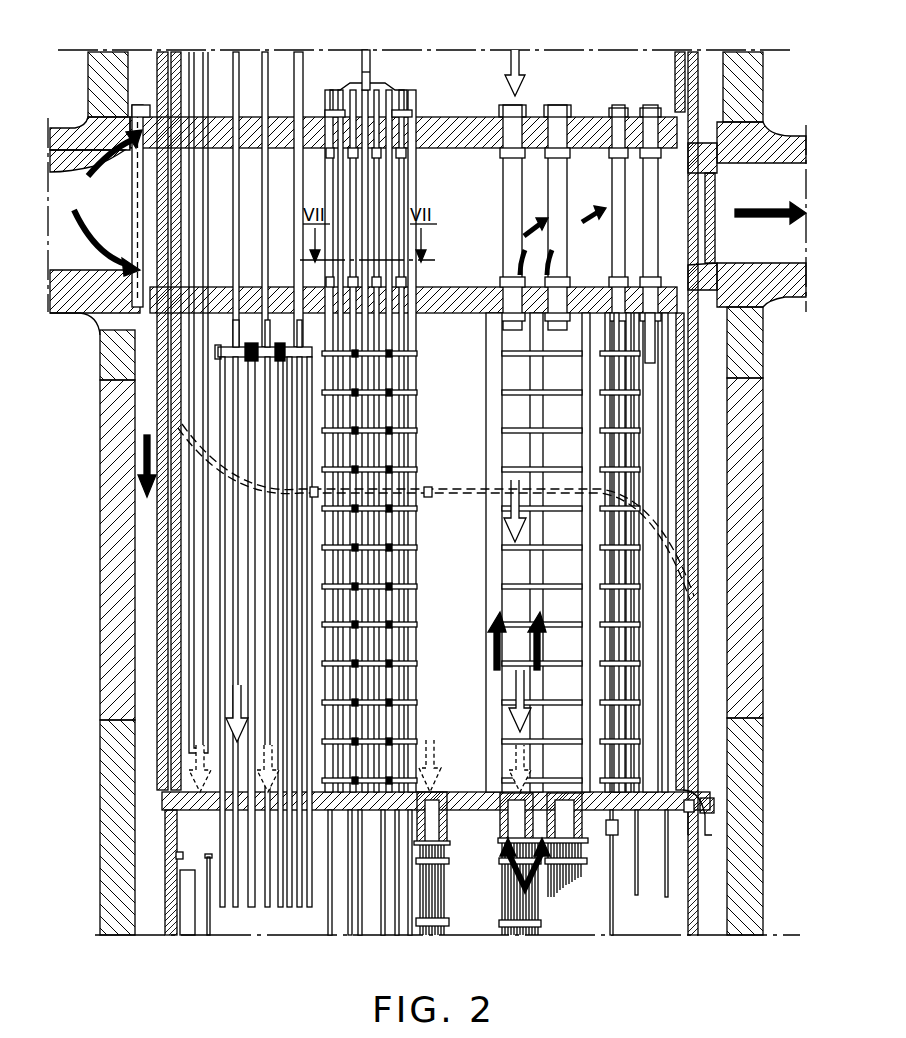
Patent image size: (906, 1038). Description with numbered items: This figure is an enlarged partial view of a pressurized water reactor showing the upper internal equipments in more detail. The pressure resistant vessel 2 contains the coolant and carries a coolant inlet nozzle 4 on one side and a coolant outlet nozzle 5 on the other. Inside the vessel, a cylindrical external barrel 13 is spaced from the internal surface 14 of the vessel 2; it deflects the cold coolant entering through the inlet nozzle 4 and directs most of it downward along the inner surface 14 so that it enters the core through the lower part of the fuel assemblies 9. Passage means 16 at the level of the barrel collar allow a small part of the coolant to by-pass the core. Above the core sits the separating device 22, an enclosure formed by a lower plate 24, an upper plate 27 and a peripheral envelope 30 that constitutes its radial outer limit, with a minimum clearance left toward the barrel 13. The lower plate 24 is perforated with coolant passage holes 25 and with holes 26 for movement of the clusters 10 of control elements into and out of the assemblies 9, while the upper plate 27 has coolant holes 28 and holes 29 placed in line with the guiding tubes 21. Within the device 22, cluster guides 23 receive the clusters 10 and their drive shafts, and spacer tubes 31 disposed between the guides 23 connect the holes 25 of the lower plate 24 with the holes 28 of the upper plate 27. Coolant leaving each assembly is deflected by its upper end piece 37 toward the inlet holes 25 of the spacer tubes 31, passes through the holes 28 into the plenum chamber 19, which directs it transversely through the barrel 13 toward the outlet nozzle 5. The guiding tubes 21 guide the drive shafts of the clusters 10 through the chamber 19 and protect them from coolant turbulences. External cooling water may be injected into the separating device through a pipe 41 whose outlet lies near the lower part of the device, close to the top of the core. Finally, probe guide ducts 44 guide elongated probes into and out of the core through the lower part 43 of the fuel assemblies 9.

The pressure resistant vessel 2 is at (748, 566).
The coolant inlet nozzle 4 is at (85, 157).
The coolant outlet nozzle 5 is at (773, 143).
The fuel assembly 9 is at (530, 928).
The cluster of control elements 10 is at (228, 353).
The cylindrical external barrel 13 is at (698, 500).
The internal surface of vessel 14 is at (125, 578).
The passage means 16 is at (141, 104).
The plenum chamber 19 is at (477, 220).
The guiding tube 21 is at (650, 187).
The separating device 22 is at (460, 543).
The cluster guide 23 is at (565, 506).
The lower plate 24 is at (690, 792).
The coolant passage hole of lower plate 25 is at (574, 830).
The cluster movement hole 26 is at (558, 798).
The upper plate 27 is at (692, 283).
The coolant passage hole of upper plate 28 is at (572, 318).
The drive shaft hole 29 is at (562, 298).
The envelope 30 is at (682, 406).
The spacer tube 31 is at (540, 722).
The upper end piece 37 is at (512, 862).
The pipe 41 is at (195, 188).
The lower part of fuel assembly 43 is at (178, 890).
The probe guide duct 44 is at (176, 856).